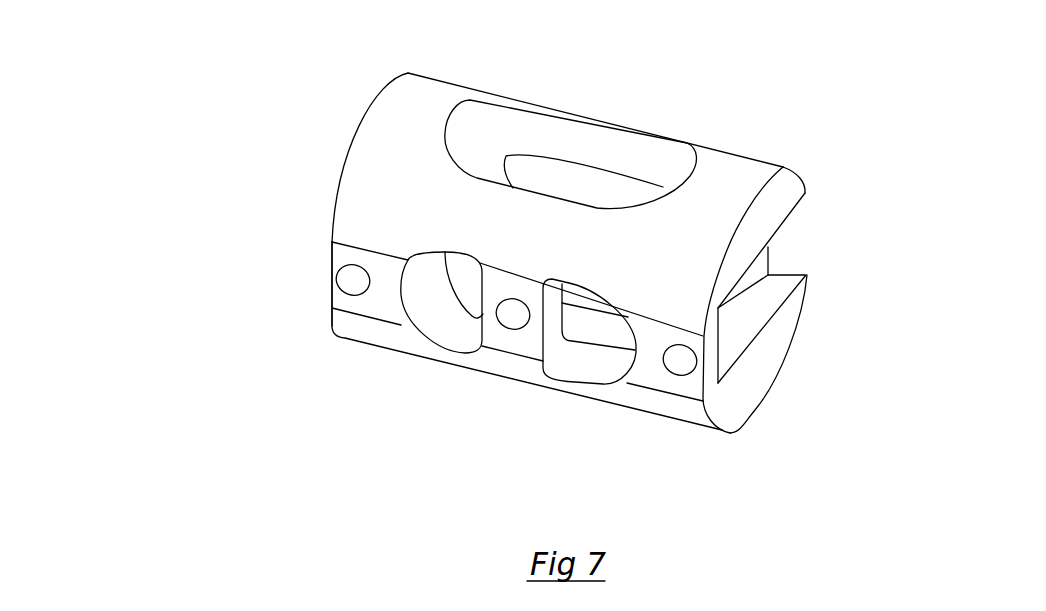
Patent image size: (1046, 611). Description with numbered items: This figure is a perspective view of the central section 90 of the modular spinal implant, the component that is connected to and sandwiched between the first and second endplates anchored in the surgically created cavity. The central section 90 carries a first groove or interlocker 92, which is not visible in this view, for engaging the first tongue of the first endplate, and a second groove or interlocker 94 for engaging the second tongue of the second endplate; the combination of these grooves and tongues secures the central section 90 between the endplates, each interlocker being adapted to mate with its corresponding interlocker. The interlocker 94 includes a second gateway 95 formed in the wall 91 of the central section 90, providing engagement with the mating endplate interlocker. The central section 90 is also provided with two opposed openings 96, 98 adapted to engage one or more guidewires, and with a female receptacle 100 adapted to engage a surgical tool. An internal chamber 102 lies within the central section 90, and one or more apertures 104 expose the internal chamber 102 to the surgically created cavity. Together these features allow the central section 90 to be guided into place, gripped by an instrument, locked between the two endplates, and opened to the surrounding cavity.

The central section 90 is at (621, 236).
The wall 91 is at (814, 281).
The first groove or interlocker 92 is at (203, 191).
The second groove or interlocker 94 is at (814, 329).
The second gateway 95 is at (827, 288).
The opening 96 is at (293, 294).
The opening 98 is at (656, 425).
The female receptacle 100 is at (499, 377).
The internal chamber 102 is at (571, 125).
The aperture 104 is at (609, 121).